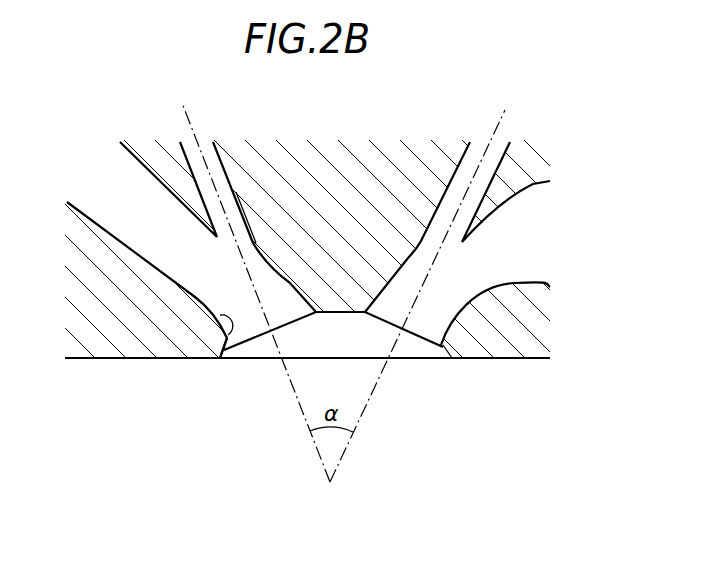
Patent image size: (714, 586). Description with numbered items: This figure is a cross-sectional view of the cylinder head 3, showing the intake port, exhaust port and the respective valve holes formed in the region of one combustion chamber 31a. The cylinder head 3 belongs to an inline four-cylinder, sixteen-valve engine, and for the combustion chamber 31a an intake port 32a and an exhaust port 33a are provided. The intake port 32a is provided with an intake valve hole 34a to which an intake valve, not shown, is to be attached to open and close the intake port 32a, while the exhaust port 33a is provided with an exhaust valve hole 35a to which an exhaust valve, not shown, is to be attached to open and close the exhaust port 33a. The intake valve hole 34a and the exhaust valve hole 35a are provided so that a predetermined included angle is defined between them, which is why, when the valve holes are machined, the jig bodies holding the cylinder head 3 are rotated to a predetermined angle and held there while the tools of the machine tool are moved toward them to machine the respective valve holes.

The cylinder head 3 is at (130, 345).
The combustion chamber 31a is at (447, 357).
The intake port 32a is at (220, 347).
The exhaust port 33a is at (485, 306).
The intake valve hole 34a is at (221, 148).
The exhaust valve hole 35a is at (466, 152).